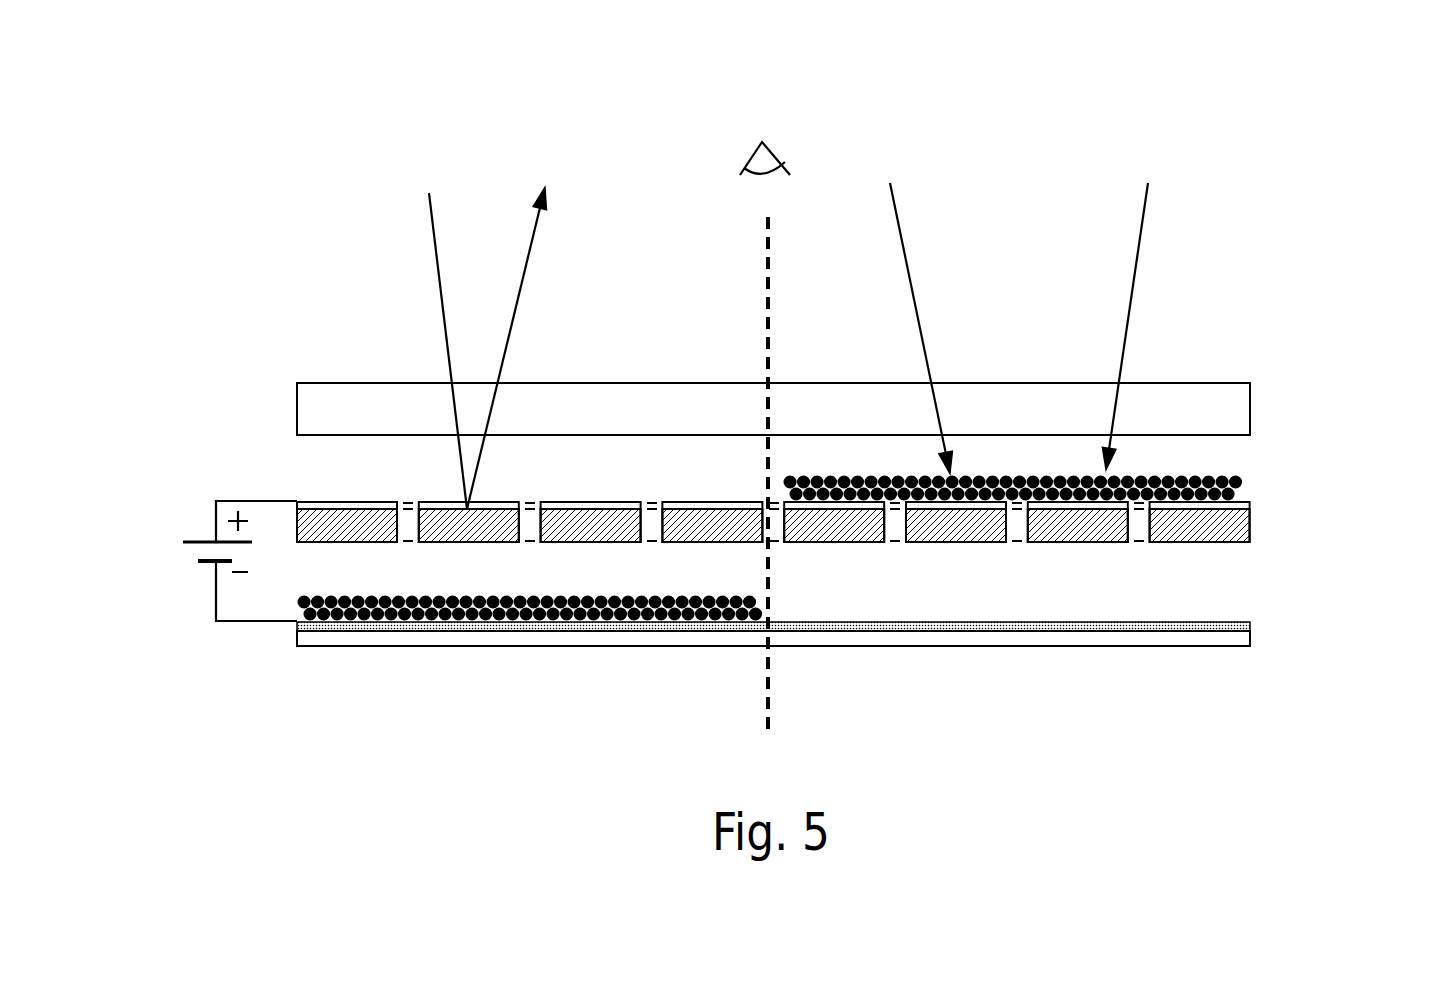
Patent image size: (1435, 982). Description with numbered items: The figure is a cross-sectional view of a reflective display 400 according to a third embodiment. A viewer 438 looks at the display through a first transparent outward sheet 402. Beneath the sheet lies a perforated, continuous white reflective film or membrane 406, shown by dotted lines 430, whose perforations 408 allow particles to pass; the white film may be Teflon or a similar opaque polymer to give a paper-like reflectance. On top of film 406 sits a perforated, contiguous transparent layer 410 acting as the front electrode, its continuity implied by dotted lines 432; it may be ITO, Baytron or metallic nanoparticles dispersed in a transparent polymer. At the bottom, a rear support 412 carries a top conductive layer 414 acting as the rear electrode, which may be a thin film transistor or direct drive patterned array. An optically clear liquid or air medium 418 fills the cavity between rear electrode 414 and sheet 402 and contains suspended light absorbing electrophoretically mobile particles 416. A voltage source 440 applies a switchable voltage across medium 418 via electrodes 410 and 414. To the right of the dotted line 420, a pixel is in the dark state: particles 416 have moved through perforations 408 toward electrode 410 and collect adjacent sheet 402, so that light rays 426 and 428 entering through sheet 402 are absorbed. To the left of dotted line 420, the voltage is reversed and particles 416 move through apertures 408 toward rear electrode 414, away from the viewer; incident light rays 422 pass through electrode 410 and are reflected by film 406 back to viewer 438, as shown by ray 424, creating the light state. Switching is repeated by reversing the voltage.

The display 400 is at (1206, 349).
The first transparent outward sheet 402 is at (297, 410).
The perforated sheet 406 is at (1250, 523).
The perforations 408 is at (1017, 528).
The front electrode 410 is at (348, 500).
The rear support 412 is at (968, 647).
The top conductive layer 414 is at (1227, 627).
The light absorbing electrophoretically mobile particles 416 is at (1245, 480).
The medium 418 is at (378, 478).
The dotted line 420 is at (762, 260).
The incident light rays 422 is at (430, 230).
The ray 424 is at (527, 247).
The light rays 426 is at (898, 217).
The light rays 428 is at (1142, 223).
The dotted lines 430 is at (407, 543).
The dotted lines 432 is at (648, 502).
The viewer 438 is at (778, 160).
The voltage source 440 is at (215, 590).